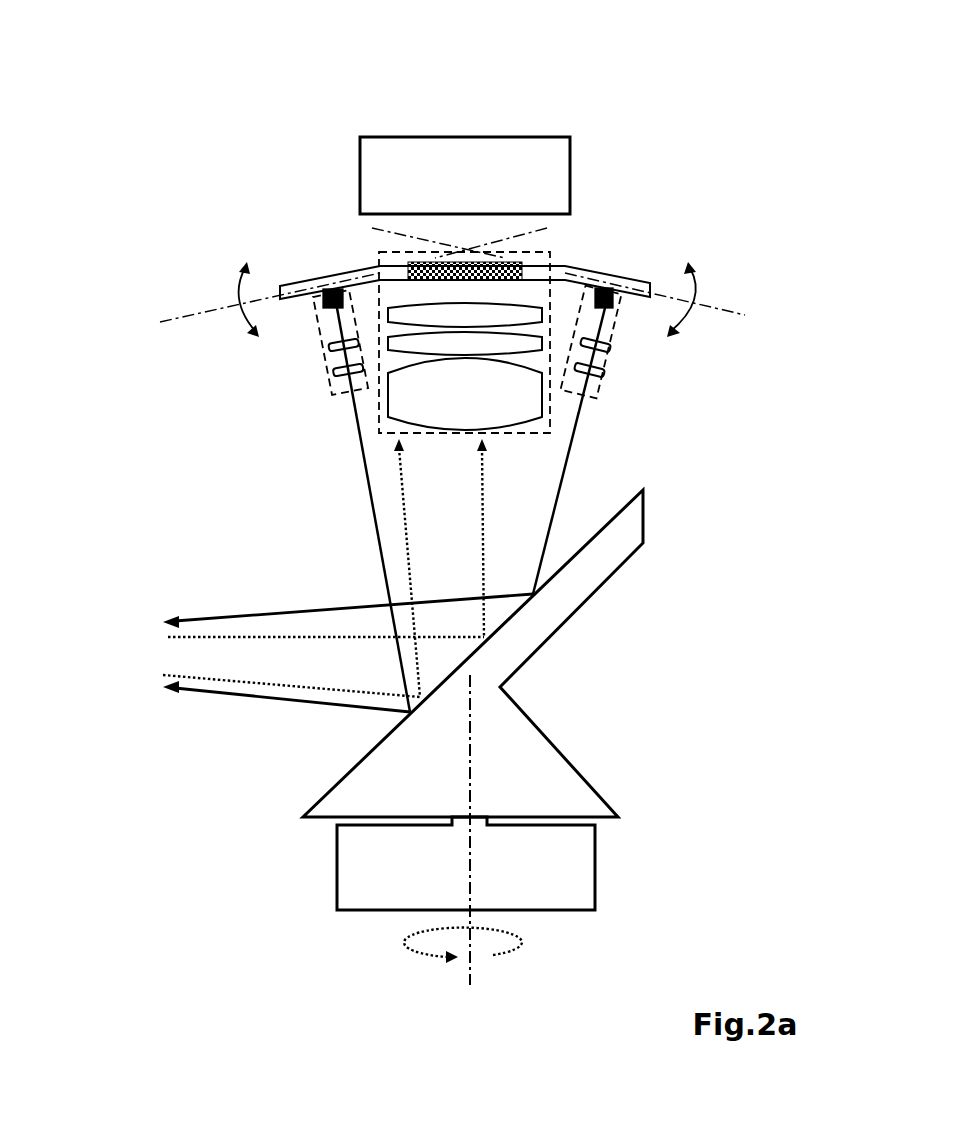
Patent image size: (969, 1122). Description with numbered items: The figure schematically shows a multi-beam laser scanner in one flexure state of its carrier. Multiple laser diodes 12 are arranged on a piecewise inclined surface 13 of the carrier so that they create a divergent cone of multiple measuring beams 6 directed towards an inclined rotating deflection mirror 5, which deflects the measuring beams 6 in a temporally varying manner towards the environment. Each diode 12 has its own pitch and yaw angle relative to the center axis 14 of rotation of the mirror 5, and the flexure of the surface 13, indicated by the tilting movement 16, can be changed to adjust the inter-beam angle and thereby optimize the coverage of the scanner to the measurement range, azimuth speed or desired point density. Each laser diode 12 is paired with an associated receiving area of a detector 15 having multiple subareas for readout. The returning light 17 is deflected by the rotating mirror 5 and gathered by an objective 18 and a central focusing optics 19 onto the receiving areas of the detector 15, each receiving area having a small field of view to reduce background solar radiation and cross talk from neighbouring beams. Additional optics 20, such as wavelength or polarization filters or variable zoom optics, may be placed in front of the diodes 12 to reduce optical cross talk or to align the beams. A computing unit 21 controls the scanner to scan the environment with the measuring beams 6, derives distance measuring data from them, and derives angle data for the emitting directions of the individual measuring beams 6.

The deflection mirror 5 is at (509, 653).
The measuring beams 6 is at (225, 690).
The laser diodes 12 is at (477, 235).
The piecewise inclined surface 13 is at (666, 349).
The center axis of rotation 14 is at (549, 830).
The detector 15 is at (610, 191).
The tilting movement of carrier 16 is at (441, 282).
The returning light 17 is at (482, 552).
The objective 18 is at (558, 363).
The central focusing optics 19 is at (274, 188).
The additional optics 20 is at (316, 501).
The computing unit 21 is at (445, 123).